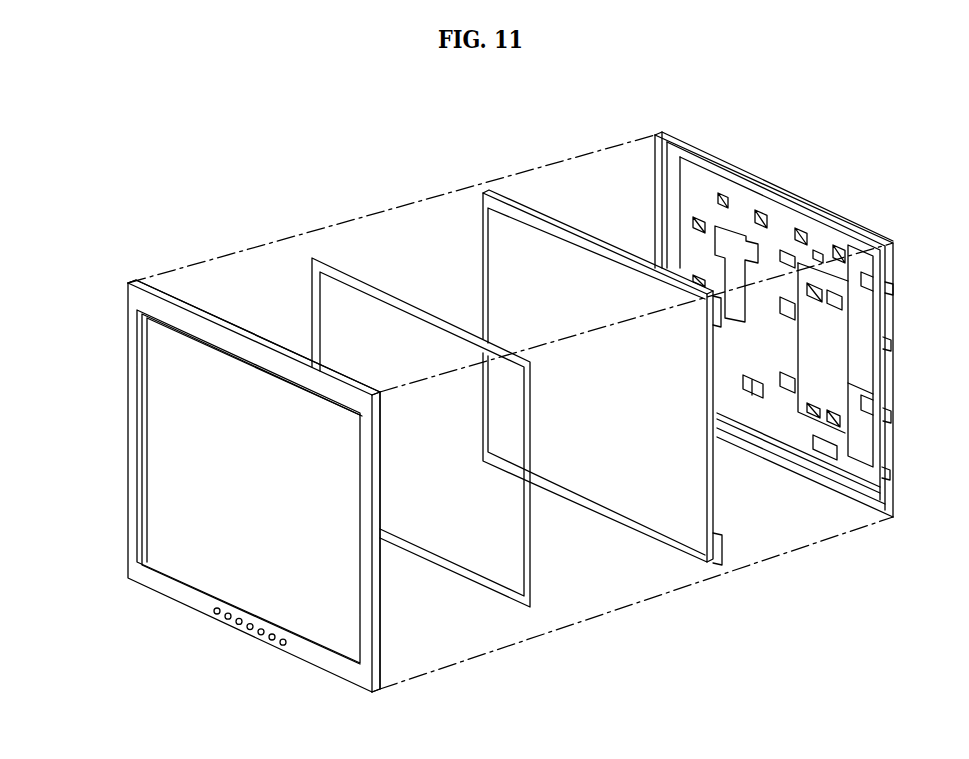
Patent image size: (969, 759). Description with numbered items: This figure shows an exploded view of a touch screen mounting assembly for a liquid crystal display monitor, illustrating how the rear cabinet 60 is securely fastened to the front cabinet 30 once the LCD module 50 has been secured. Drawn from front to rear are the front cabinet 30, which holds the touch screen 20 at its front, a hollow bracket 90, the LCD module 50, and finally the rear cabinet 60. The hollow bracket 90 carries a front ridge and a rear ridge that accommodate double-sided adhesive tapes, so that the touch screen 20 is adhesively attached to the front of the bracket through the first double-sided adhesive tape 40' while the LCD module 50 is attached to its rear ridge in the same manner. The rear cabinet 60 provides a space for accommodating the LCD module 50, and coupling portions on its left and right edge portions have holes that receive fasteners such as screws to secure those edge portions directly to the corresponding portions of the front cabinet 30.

The touch screen 20 is at (216, 559).
The front cabinet 30 is at (124, 474).
The hollow bracket 90 is at (215, 301).
The first double-sided adhesive tape 40' is at (419, 542).
The LCD module 50 is at (601, 235).
The rear cabinet 60 is at (787, 187).